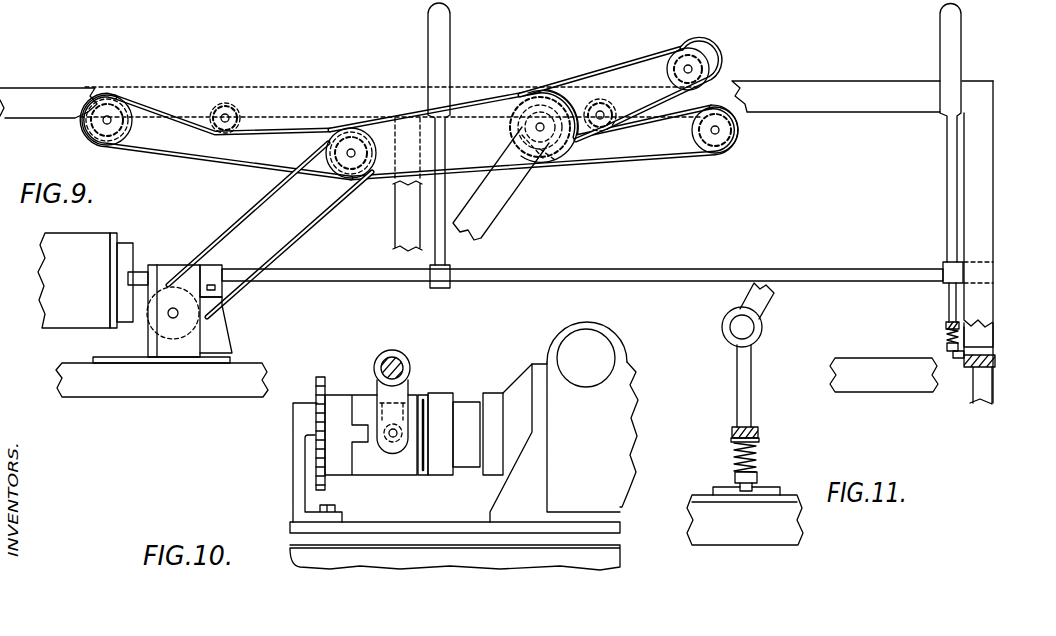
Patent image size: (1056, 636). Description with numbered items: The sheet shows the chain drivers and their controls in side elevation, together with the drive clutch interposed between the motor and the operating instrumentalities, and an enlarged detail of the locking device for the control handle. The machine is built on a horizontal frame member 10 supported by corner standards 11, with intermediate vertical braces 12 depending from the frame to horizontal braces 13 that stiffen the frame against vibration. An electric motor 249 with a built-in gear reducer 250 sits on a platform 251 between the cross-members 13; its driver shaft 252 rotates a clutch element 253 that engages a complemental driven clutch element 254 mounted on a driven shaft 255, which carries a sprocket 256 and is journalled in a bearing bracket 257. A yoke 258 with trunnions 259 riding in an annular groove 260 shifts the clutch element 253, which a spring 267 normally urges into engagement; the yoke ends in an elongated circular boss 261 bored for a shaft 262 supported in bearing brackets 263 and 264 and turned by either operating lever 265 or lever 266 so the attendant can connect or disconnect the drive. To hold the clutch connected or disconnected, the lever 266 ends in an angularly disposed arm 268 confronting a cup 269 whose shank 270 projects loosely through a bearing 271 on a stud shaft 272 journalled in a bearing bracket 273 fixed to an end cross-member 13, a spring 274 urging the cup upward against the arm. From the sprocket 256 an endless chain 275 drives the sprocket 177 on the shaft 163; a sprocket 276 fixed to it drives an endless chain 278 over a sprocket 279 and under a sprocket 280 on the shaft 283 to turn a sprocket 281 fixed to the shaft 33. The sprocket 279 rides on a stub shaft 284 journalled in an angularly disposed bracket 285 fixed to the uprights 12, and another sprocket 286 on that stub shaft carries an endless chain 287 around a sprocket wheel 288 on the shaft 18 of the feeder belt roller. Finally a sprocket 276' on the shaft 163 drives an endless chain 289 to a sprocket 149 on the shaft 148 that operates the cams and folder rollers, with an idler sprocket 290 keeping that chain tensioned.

In FIG. 9, the horizontal frame member 10 is at (32, 105).
In FIG. 9, the corner standards 11 is at (983, 143).
In FIG. 9, the intermediate vertical braces 12 is at (395, 230).
In FIG. 9, the horizontal braces 13 is at (75, 392).
In FIG. 10, the horizontal braces 13 is at (603, 552).
In FIG. 11, the horizontal braces 13 is at (793, 522).
In FIG. 9, the shaft 18 is at (693, 70).
In FIG. 9, the shaft 33 is at (720, 130).
In FIG. 9, the shaft 148 is at (117, 110).
In FIG. 9, the sprocket 149 is at (103, 135).
In FIG. 9, the shaft 163 is at (333, 176).
In FIG. 9, the sprocket 177 is at (378, 180).
In FIG. 9, the electric motor 249 is at (60, 310).
In FIG. 10, the electric motor 249 is at (637, 367).
In FIG. 9, the gear reducer 250 is at (177, 260).
In FIG. 10, the gear reducer 250 is at (585, 340).
In FIG. 9, the platform 251 is at (150, 360).
In FIG. 10, the platform 251 is at (317, 533).
In FIG. 10, the driver shaft 252 is at (497, 417).
In FIG. 10, the clutch element 253 is at (470, 403).
In FIG. 10, the driven clutch element 254 is at (345, 465).
In FIG. 9, the driven shaft 255 is at (178, 313).
In FIG. 9, the sprocket 256 is at (197, 333).
In FIG. 10, the sprocket 256 is at (318, 377).
In FIG. 9, the bearing bracket 257 is at (173, 332).
In FIG. 10, the bearing bracket 257 is at (298, 468).
In FIG. 10, the yoke 258 is at (393, 398).
In FIG. 10, the trunnions 259 is at (393, 445).
In FIG. 10, the annular groove 260 is at (387, 470).
In FIG. 9, the elongated circular boss 261 is at (180, 265).
In FIG. 10, the elongated circular boss 261 is at (380, 355).
In FIG. 9, the shaft 262 is at (567, 277).
In FIG. 10, the shaft 262 is at (397, 362).
In FIG. 11, the shaft 262 is at (754, 329).
In FIG. 9, the bearing bracket 263 is at (213, 268).
In FIG. 9, the bearing bracket 264 is at (977, 265).
In FIG. 9, the operating lever 265 is at (443, 50).
In FIG. 9, the operating lever 266 is at (945, 53).
In FIG. 11, the operating lever 266 is at (762, 297).
In FIG. 10, the spring 267 is at (423, 397).
In FIG. 9, the angularly disposed arm 268 is at (949, 300).
In FIG. 11, the angularly disposed arm 268 is at (748, 368).
In FIG. 9, the cup 269 is at (947, 325).
In FIG. 11, the cup 269 is at (758, 432).
In FIG. 9, the shank 270 is at (948, 336).
In FIG. 11, the shank 270 is at (757, 455).
In FIG. 9, the bearing 271 is at (949, 347).
In FIG. 11, the bearing 271 is at (757, 477).
In FIG. 9, the stud shaft 272 is at (953, 357).
In FIG. 9, the bearing bracket 273 is at (983, 347).
In FIG. 11, the bearing bracket 273 is at (728, 488).
In FIG. 11, the spring 274 is at (759, 440).
In FIG. 9, the endless chain 275 is at (263, 198).
In FIG. 9, the sprocket 276 is at (346, 134).
In FIG. 9, the sprocket 276' is at (363, 132).
In FIG. 9, the endless chain 278 is at (473, 103).
In FIG. 9, the sprocket 279 is at (530, 103).
In FIG. 9, the sprocket 280 is at (607, 134).
In FIG. 9, the sprocket 281 is at (720, 143).
In FIG. 9, the shaft 283 is at (600, 112).
In FIG. 9, the stub shaft 284 is at (538, 127).
In FIG. 9, the angularly disposed bracket 285 is at (493, 200).
In FIG. 9, the sprocket 286 is at (547, 160).
In FIG. 9, the endless chain 287 is at (643, 78).
In FIG. 9, the sprocket wheel 288 is at (688, 50).
In FIG. 9, the endless chain 289 is at (297, 130).
In FIG. 9, the idler sprocket 290 is at (217, 107).